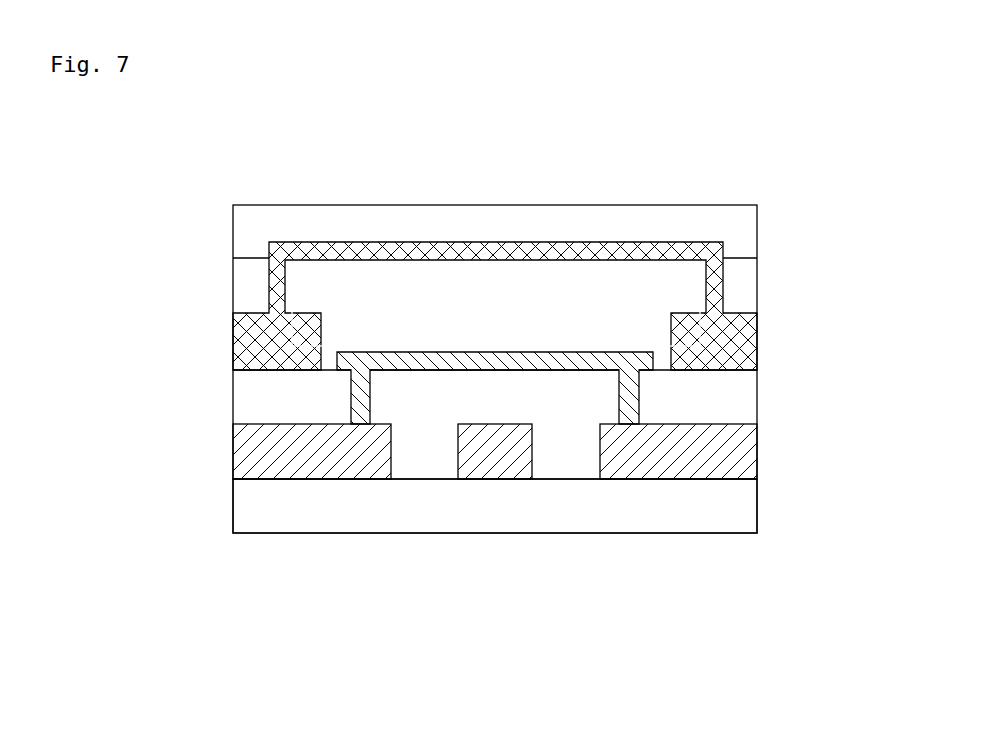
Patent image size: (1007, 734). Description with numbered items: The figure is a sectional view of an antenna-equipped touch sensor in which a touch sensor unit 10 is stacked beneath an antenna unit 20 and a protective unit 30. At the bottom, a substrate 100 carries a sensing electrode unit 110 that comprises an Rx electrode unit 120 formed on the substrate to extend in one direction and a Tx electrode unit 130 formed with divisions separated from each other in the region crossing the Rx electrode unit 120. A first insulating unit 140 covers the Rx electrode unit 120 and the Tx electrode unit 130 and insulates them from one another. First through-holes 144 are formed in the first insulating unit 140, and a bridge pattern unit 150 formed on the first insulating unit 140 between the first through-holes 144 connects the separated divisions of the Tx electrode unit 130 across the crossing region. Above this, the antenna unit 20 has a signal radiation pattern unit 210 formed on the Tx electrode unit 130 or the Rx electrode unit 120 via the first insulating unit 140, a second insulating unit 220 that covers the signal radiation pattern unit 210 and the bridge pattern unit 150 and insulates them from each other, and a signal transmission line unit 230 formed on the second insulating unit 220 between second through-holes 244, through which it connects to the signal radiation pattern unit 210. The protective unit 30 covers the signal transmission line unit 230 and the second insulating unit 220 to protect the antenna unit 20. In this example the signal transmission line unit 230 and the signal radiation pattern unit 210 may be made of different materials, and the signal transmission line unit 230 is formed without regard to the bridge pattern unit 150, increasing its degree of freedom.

The touch sensor unit 10 is at (495, 521).
The antenna unit 20 is at (493, 238).
The protective unit 30 is at (742, 218).
The substrate 100 is at (505, 642).
The sensing electrode unit 110 is at (495, 498).
The Rx electrode unit 120 is at (498, 460).
The Tx electrode unit 130 is at (382, 600).
The first insulating unit 140 is at (560, 460).
The first through-holes 144 is at (360, 408).
The bridge pattern unit 150 is at (449, 477).
The signal radiation pattern unit 210 is at (493, 258).
The second insulating unit 220 is at (428, 312).
The signal transmission line unit 230 is at (495, 243).
The second through-holes 244 is at (277, 290).